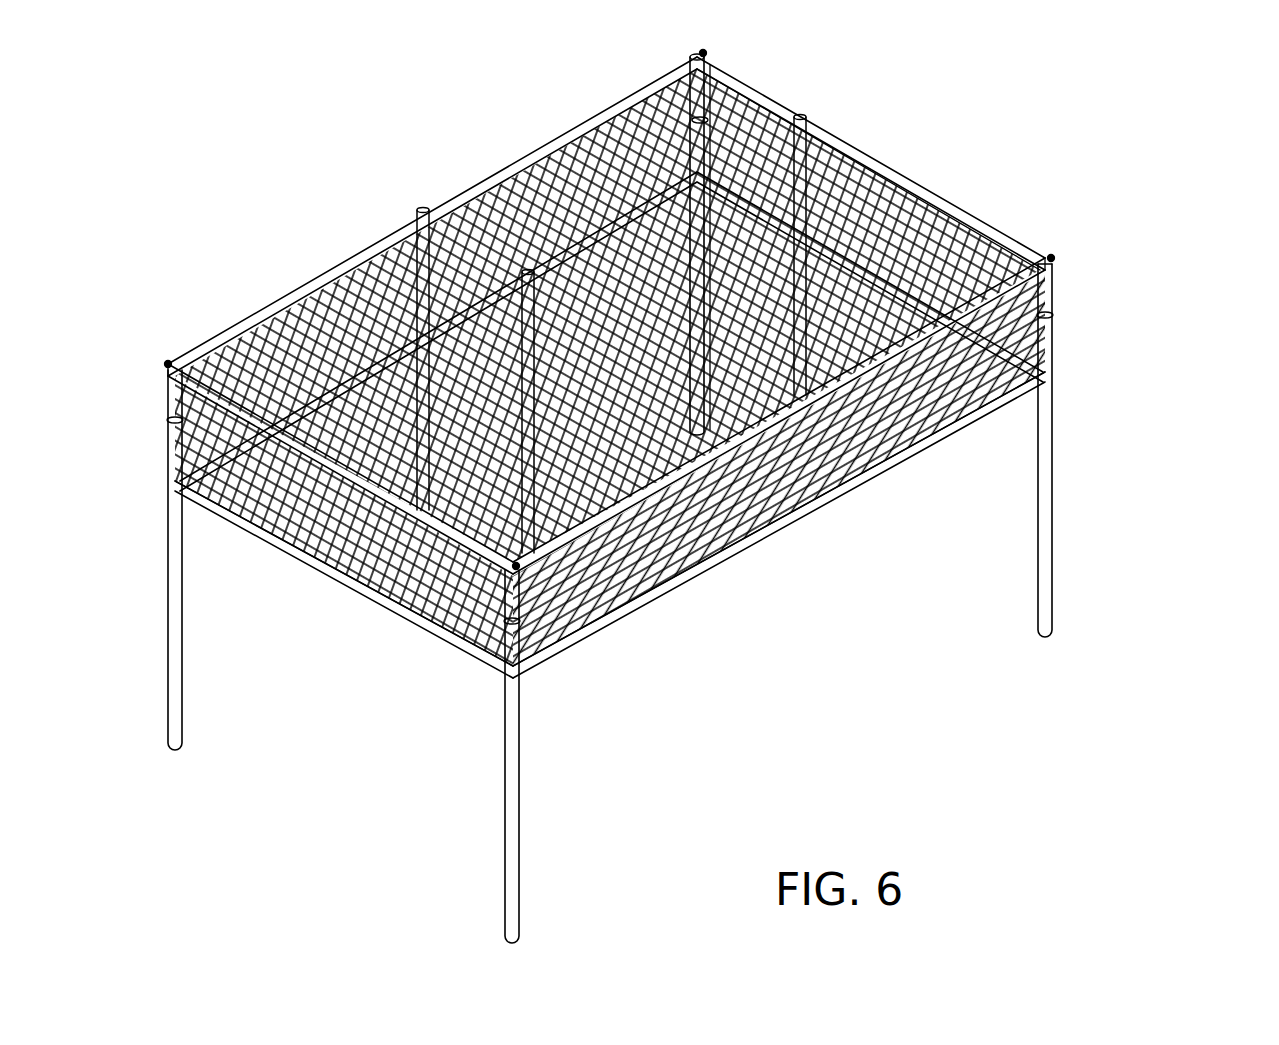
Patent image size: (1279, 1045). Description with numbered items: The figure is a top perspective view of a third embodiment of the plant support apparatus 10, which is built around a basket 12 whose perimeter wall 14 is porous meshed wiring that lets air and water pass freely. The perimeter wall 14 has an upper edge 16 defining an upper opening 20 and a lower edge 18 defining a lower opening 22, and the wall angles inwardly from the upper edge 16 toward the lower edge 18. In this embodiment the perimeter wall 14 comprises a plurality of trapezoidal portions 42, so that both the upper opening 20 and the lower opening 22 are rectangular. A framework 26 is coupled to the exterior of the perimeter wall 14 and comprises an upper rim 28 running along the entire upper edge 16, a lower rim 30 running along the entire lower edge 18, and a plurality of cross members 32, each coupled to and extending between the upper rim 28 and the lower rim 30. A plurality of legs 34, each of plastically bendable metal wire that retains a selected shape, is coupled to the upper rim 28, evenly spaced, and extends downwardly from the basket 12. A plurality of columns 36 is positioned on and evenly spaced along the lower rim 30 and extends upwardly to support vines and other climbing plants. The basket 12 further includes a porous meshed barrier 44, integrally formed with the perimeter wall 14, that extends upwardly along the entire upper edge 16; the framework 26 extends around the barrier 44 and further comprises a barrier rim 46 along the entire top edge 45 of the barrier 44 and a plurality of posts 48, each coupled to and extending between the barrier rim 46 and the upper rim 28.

The plant support apparatus 10 is at (988, 150).
The basket 12 is at (645, 695).
The perimeter wall 14 is at (575, 150).
The upper edge 16 is at (640, 115).
The lower edge 18 is at (583, 495).
The upper opening 20 is at (855, 207).
The lower opening 22 is at (504, 178).
The framework 26 is at (1082, 326).
The upper rim 28 is at (930, 437).
The lower rim 30 is at (456, 640).
The cross member 32 is at (713, 205).
The leg 34 is at (802, 292).
The column 36 is at (697, 95).
The trapezoidal portion 42 is at (806, 440).
The barrier 44 is at (1058, 260).
The top edge 45 is at (357, 260).
The barrier rim 46 is at (403, 240).
The post 48 is at (712, 136).